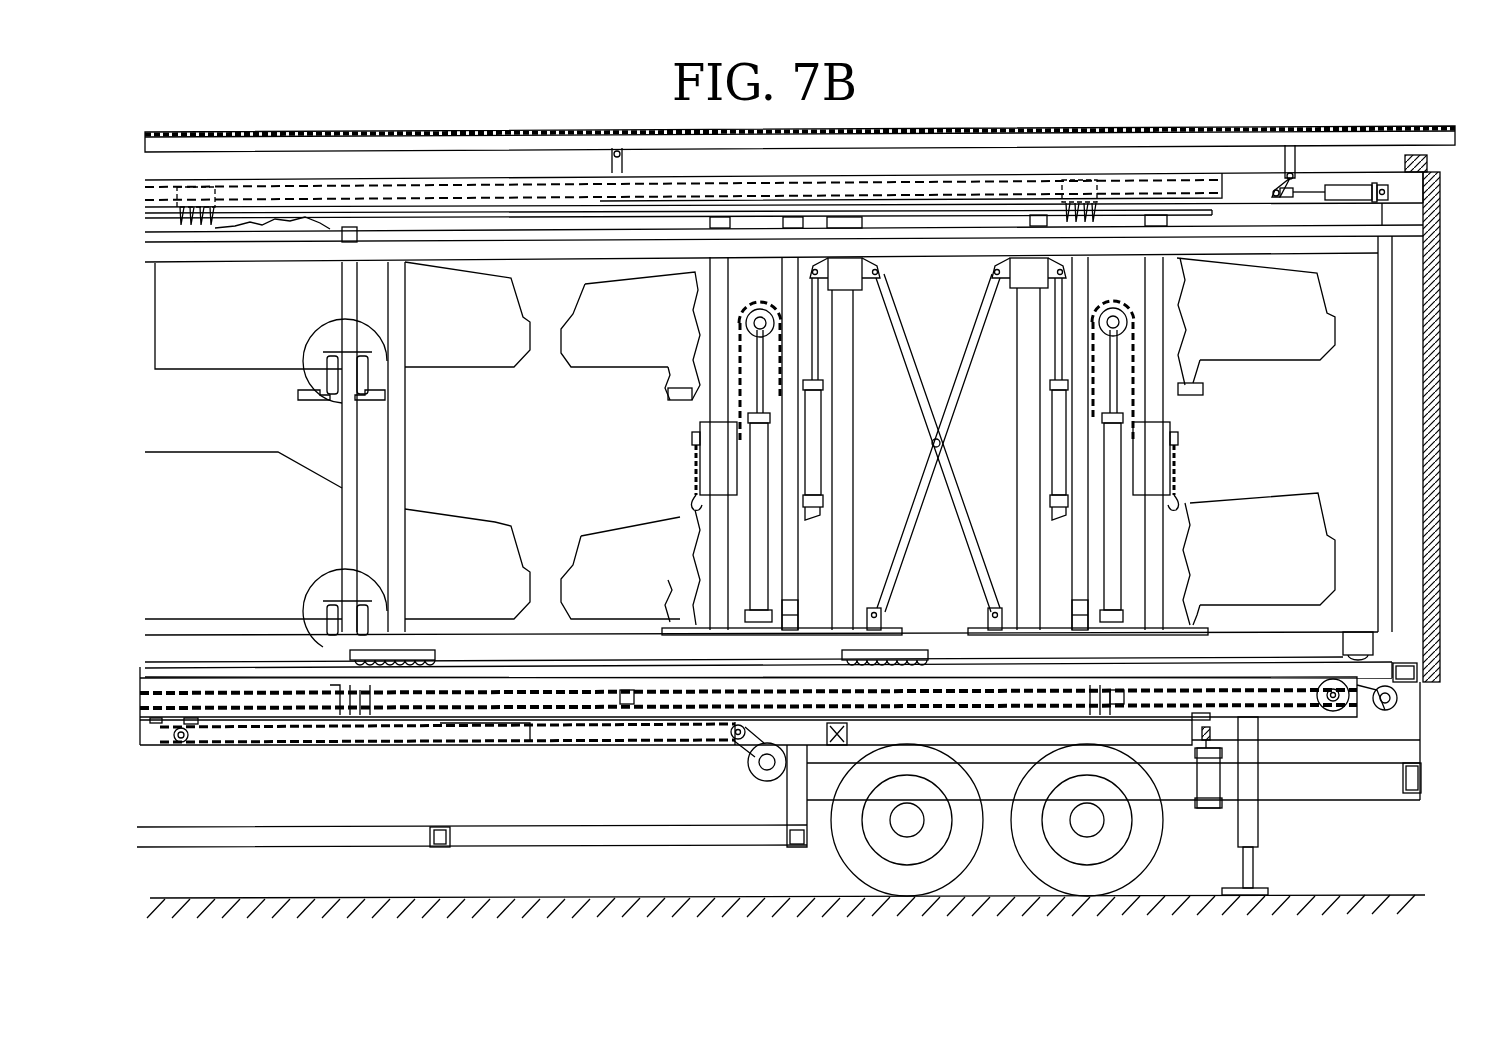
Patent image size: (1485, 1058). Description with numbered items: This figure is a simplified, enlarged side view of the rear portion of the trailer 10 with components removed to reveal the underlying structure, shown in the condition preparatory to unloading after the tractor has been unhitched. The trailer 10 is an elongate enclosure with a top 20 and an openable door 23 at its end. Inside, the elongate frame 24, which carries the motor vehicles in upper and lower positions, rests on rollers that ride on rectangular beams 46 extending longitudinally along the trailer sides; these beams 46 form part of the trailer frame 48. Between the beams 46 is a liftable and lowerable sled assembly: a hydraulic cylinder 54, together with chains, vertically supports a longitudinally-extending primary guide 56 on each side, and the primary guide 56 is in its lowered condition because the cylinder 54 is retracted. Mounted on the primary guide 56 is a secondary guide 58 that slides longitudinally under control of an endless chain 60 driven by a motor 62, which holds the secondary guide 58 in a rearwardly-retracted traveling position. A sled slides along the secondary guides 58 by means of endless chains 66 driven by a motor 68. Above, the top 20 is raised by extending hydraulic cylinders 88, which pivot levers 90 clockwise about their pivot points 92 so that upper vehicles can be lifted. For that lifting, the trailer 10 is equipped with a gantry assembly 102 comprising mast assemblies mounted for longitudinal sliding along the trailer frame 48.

The trailer 10 is at (926, 106).
The top 20 is at (1086, 128).
The door 23 is at (1438, 360).
The frame 24 is at (266, 256).
The rectangular beams 46 is at (182, 665).
The trailer frame 48 is at (1400, 180).
The hydraulic cylinder 54 is at (1230, 790).
The primary guide 56 is at (162, 737).
The secondary guide 58 is at (245, 688).
The endless chain 60 is at (548, 725).
The motor 62 is at (750, 770).
The endless chains 66 is at (370, 712).
The motor 68 is at (1352, 700).
The hydraulic cylinders 88 is at (1353, 185).
The levers 90 is at (1284, 157).
The pivot points 92 is at (1292, 186).
The gantry assembly 102 is at (682, 468).